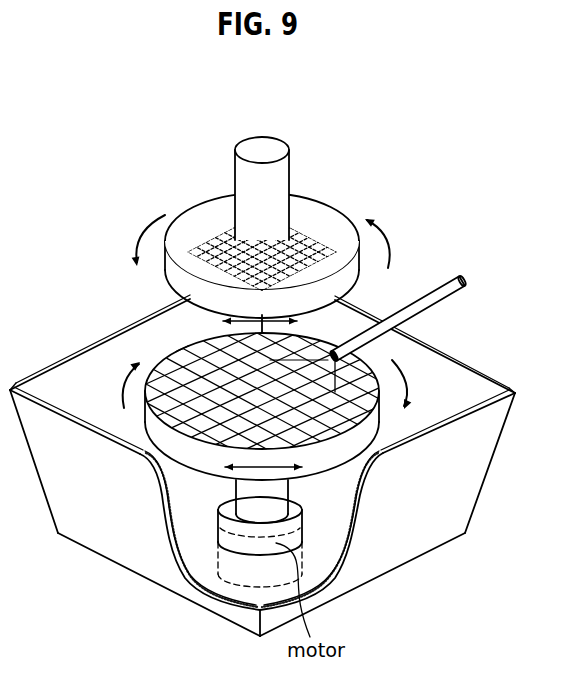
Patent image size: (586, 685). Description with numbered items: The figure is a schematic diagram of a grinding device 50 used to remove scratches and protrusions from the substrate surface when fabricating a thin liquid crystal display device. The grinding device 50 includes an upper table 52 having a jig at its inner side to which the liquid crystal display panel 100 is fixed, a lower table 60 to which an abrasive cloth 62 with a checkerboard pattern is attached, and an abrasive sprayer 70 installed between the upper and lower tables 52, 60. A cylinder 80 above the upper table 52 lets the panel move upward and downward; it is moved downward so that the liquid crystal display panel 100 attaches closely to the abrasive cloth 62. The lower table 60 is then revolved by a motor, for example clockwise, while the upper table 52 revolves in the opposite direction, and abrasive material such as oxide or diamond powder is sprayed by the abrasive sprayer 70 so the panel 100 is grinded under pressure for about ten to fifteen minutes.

The grinding device 50 is at (453, 218).
The upper table 52 is at (167, 276).
The lower table 60 is at (360, 437).
The abrasive cloth 62 is at (180, 360).
The abrasive sprayer 70 is at (438, 297).
The cylinder 80 is at (272, 146).
The liquid crystal display panel 100 is at (303, 237).